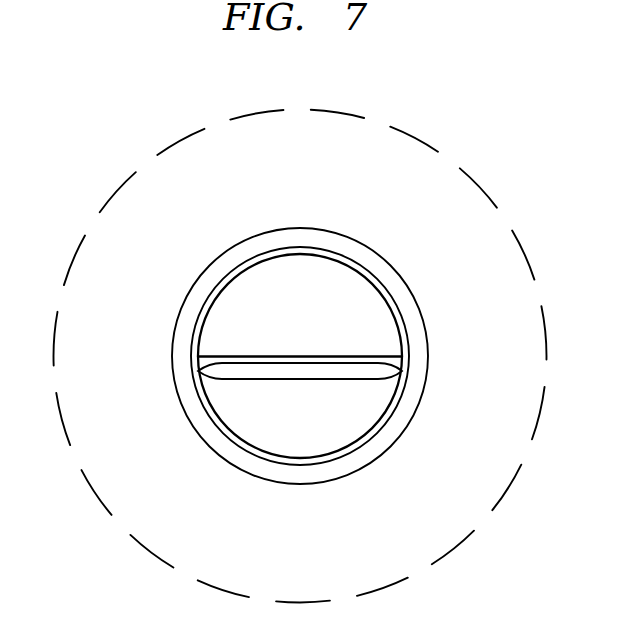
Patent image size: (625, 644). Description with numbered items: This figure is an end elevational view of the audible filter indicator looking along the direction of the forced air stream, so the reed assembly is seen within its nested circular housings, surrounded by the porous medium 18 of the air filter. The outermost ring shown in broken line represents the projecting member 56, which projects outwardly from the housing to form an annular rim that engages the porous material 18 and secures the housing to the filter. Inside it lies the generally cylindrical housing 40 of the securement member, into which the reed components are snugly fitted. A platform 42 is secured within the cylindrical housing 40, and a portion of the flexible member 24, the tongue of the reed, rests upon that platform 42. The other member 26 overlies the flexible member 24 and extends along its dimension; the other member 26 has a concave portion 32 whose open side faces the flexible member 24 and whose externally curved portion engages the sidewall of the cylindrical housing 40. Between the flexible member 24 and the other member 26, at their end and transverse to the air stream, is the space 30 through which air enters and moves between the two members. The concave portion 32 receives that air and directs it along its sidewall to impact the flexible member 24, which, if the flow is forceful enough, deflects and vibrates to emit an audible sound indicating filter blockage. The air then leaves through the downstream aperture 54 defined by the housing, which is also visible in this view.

The porous medium 18 is at (138, 201).
The flexible member 24 is at (330, 373).
The other member 26 is at (301, 272).
The space 30 is at (397, 365).
The concave portion 32 is at (338, 293).
The cylindrical housing 40 is at (207, 318).
The platform 42 is at (282, 424).
The aperture 54 is at (374, 317).
The projecting member 56 is at (186, 415).